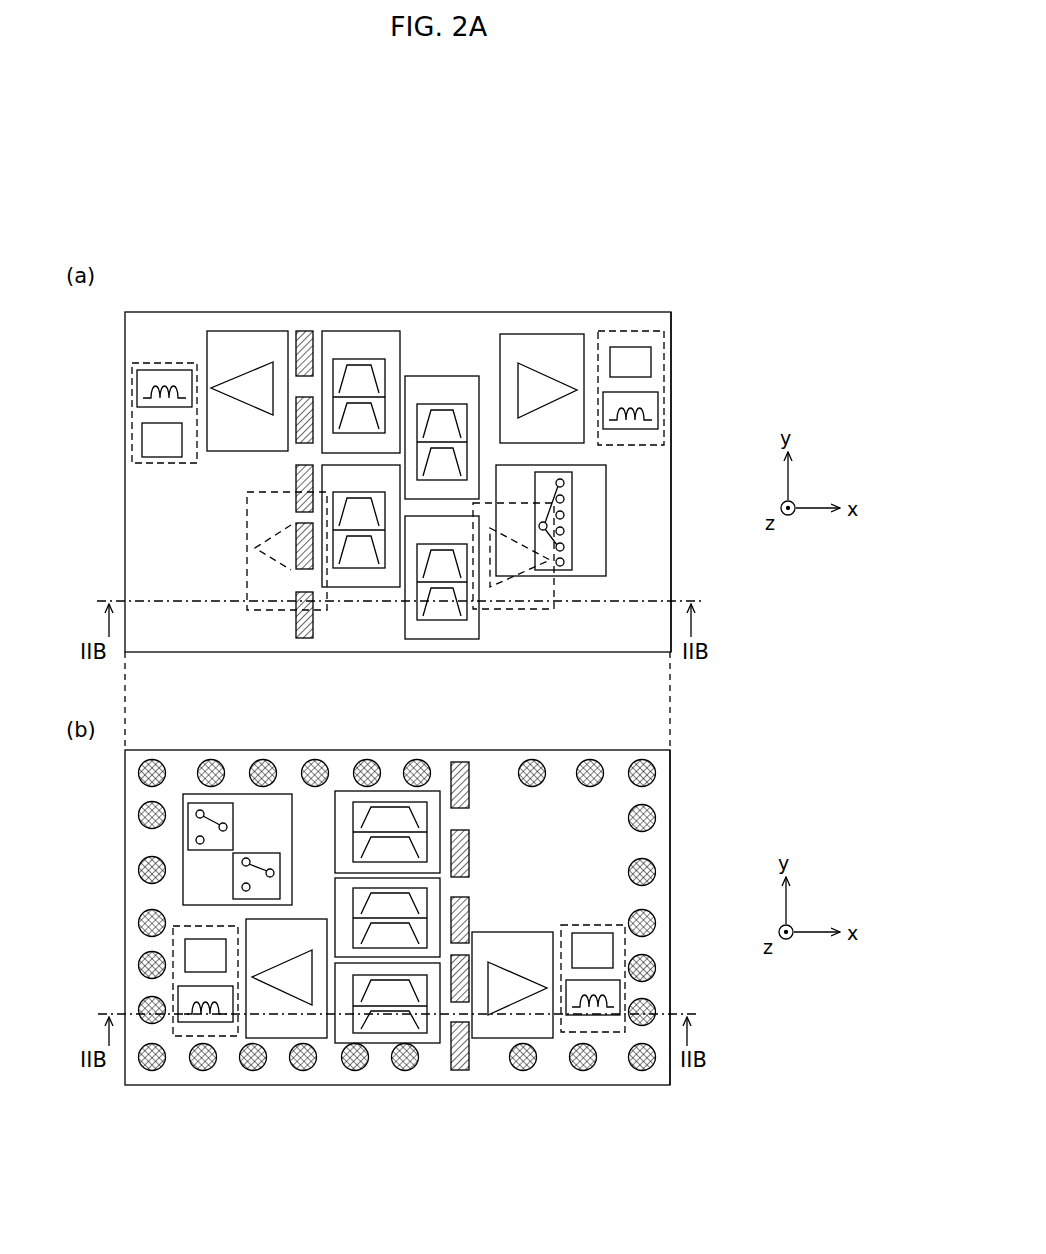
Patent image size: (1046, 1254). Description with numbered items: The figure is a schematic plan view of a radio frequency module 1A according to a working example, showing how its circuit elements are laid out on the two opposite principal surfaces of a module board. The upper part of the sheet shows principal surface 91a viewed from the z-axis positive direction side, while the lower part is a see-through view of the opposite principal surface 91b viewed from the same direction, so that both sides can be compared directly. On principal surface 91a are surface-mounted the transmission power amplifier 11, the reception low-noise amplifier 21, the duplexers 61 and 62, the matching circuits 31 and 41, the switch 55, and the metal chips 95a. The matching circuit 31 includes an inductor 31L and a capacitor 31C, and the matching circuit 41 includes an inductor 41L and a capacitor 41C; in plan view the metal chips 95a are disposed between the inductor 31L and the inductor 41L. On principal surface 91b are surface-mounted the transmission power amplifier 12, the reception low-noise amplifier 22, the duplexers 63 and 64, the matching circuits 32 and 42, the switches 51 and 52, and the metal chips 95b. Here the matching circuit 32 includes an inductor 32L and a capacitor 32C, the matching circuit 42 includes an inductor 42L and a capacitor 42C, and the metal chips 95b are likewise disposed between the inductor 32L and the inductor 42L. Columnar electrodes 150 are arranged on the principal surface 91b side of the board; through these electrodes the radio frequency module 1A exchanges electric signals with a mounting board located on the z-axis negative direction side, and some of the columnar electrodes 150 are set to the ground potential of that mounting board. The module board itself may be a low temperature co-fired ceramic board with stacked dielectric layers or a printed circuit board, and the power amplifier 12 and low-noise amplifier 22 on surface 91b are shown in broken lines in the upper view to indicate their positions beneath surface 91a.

The radio frequency module 1A is at (700, 296).
The transmission power amplifier 11 is at (232, 331).
The transmission power amplifier 12 is at (262, 610).
The reception low-noise amplifier 21 is at (542, 334).
The reception low-noise amplifier 22 is at (513, 610).
The matching circuit 31 is at (133, 416).
The inductor 31L is at (137, 383).
The capacitor 31C is at (142, 440).
The matching circuit 32 is at (151, 1026).
The inductor 32L is at (188, 1023).
The capacitor 32C is at (185, 953).
The matching circuit 41 is at (670, 388).
The inductor 41L is at (658, 408).
The capacitor 41C is at (651, 363).
The matching circuit 42 is at (598, 997).
The inductor 42L is at (603, 1015).
The capacitor 42C is at (593, 933).
The switch 51 is at (233, 823).
The switch 52 is at (233, 870).
The switch 55 is at (606, 528).
The duplexer 61 is at (362, 331).
The duplexer 62 is at (445, 376).
The duplexer 63 is at (336, 797).
The duplexer 64 is at (428, 1043).
The principal surface 91a is at (673, 493).
The principal surface 91b is at (671, 880).
The metal chips 95a is at (302, 331).
The metal chips 95b is at (470, 772).
The columnar electrodes 150 is at (140, 1008).